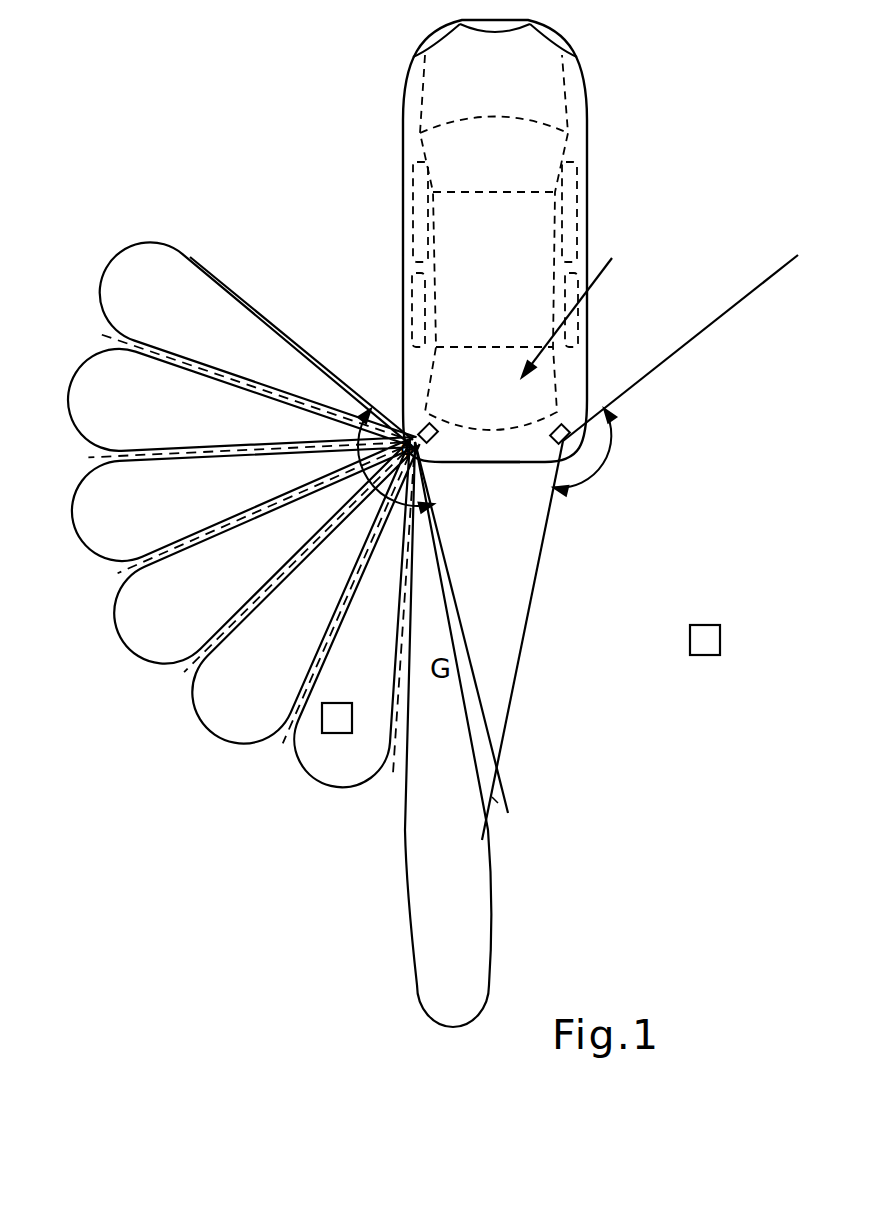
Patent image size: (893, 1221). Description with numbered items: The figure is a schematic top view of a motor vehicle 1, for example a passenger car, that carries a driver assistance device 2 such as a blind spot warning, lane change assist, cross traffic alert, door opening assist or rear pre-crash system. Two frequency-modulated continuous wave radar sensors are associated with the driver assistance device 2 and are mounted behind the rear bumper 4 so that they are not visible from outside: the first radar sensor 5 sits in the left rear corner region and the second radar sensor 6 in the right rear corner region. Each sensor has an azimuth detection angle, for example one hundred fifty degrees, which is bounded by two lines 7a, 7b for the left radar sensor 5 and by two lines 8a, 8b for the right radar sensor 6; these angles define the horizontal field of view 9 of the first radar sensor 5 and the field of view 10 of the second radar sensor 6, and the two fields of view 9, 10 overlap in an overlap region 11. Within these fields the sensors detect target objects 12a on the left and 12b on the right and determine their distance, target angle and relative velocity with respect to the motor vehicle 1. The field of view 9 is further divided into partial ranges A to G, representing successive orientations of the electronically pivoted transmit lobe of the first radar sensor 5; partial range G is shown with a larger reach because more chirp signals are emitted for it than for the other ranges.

The motor vehicle 1 is at (590, 204).
The driver assistance device 2 is at (575, 303).
The rear bumper 4 is at (497, 466).
The first radar sensor 5 is at (437, 428).
The second radar sensor 6 is at (552, 428).
The boundary line of azimuth detection range of left radar sensor 7a is at (251, 300).
The boundary line of azimuth detection range of left radar sensor 7b is at (447, 565).
The boundary line of azimuth detection range of right radar sensor 8a is at (706, 328).
The boundary line of azimuth detection range of right radar sensor 8b is at (535, 577).
The field of view 9 is at (186, 616).
The field of view 10 is at (711, 542).
The overlap region 11 is at (495, 800).
The target object 12a is at (337, 723).
The target object 12b is at (712, 643).